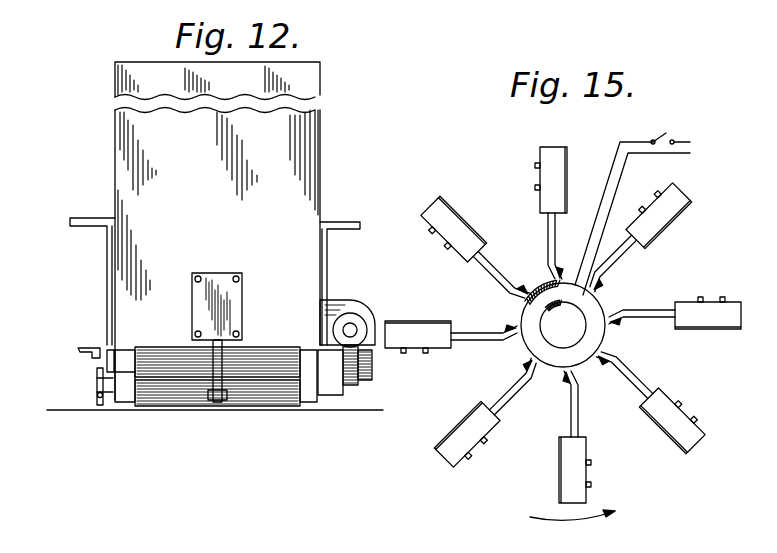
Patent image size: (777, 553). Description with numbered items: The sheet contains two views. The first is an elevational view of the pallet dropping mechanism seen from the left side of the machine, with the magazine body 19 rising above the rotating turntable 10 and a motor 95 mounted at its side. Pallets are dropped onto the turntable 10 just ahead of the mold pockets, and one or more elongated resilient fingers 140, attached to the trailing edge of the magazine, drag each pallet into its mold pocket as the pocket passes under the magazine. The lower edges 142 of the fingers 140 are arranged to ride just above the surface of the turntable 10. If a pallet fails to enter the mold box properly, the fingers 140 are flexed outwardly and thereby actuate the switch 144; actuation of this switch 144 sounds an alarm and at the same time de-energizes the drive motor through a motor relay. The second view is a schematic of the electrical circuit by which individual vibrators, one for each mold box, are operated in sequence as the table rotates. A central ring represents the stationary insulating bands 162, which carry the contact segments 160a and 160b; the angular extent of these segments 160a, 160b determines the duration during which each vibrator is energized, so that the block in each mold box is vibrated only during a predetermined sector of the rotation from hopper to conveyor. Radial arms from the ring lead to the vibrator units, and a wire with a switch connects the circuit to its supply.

In FIG. 12, the hopper body 19 is at (96, 173).
In FIG. 12, the motor 95 is at (350, 330).
In FIG. 12, the switch 144 is at (124, 350).
In FIG. 12, the elongated resilient fingers 140 is at (97, 377).
In FIG. 12, the lower edges 142 is at (96, 406).
In FIG. 12, the turntable 10 is at (372, 411).
In FIG. 15, the insulating bands 162 is at (523, 312).
In FIG. 15, the contact segment 160a is at (543, 293).
In FIG. 15, the contact segment 160b is at (552, 312).